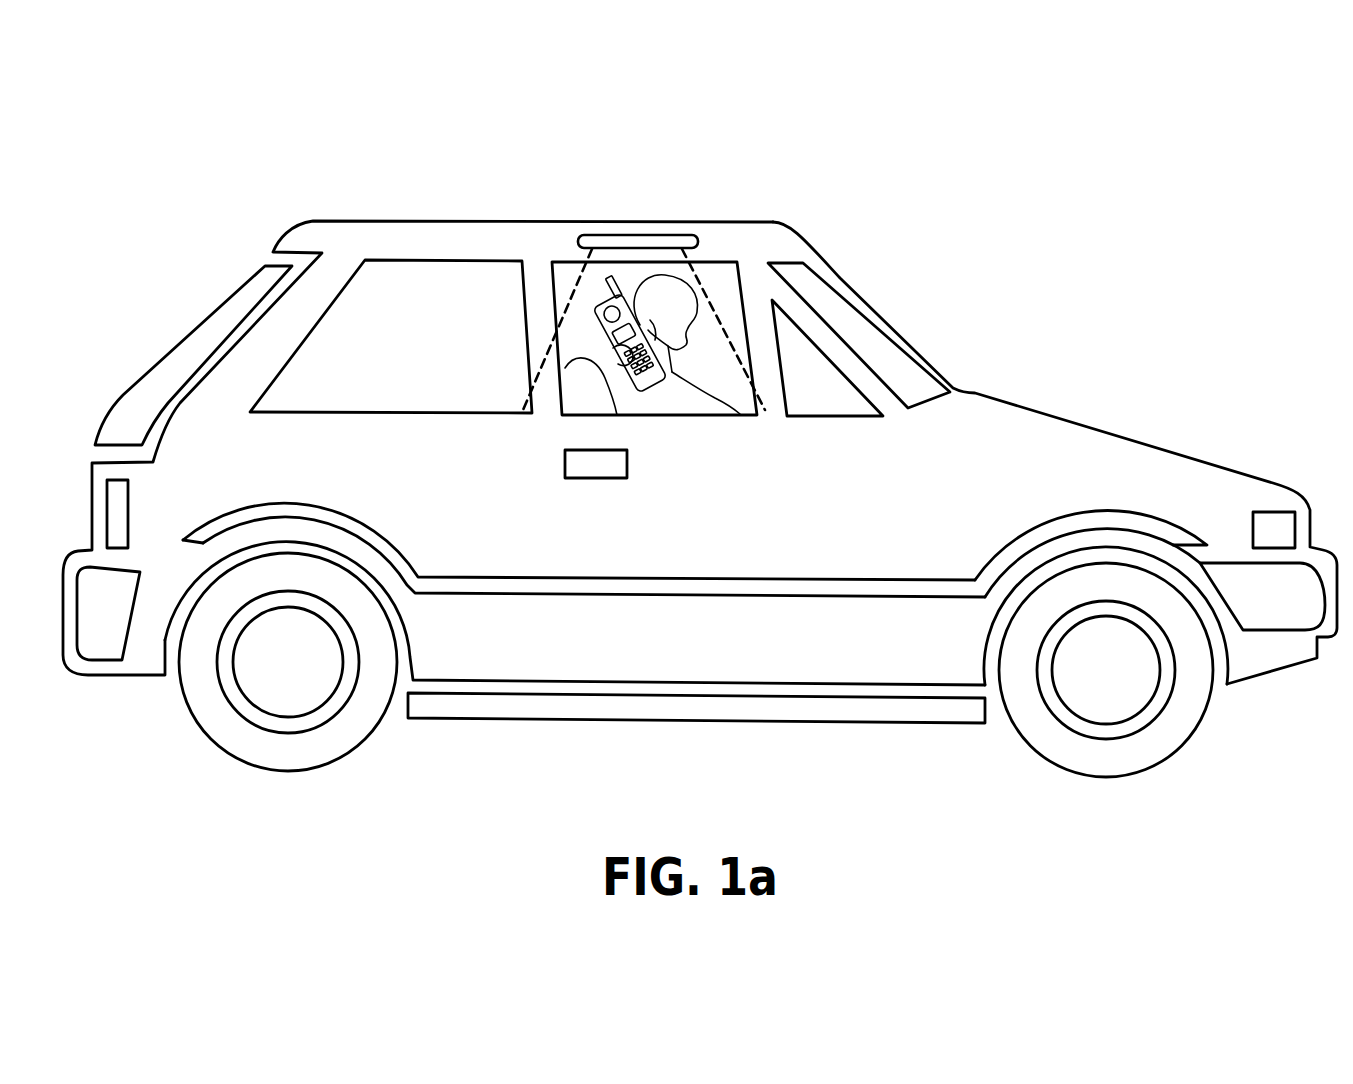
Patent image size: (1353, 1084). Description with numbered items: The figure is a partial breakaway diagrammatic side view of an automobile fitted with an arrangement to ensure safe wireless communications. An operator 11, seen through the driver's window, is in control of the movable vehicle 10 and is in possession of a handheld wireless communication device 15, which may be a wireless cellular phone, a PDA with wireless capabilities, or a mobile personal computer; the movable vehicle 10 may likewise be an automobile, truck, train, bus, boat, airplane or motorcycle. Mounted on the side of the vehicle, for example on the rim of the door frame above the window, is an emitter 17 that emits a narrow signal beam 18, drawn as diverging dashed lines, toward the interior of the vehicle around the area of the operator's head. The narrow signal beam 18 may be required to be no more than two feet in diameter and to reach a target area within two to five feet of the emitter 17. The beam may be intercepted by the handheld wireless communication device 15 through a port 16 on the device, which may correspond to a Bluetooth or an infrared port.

The movable vehicle 10 is at (1250, 476).
The operator 11 is at (615, 410).
The handheld wireless communication device 15 is at (637, 338).
The port 16 is at (637, 338).
The emitter 17 is at (620, 242).
The narrow signal beam 18 is at (757, 375).